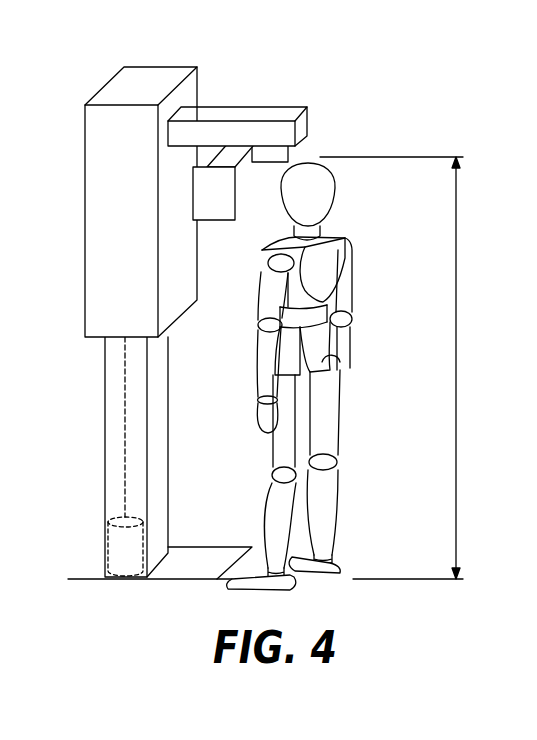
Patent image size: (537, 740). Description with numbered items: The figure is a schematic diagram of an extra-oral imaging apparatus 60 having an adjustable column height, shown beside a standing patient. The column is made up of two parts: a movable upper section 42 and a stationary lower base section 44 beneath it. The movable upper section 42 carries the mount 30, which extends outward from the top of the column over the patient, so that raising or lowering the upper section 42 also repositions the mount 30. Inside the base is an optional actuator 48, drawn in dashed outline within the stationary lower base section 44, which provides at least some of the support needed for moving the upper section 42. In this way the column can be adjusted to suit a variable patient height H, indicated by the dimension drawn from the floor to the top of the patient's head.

The extra-oral imaging apparatus 60 is at (80, 80).
The movable upper section 42 is at (93, 162).
The stationary lower base section 44 is at (110, 435).
The actuator 48 is at (120, 549).
The mount 30 is at (278, 113).
The patient height H is at (457, 395).